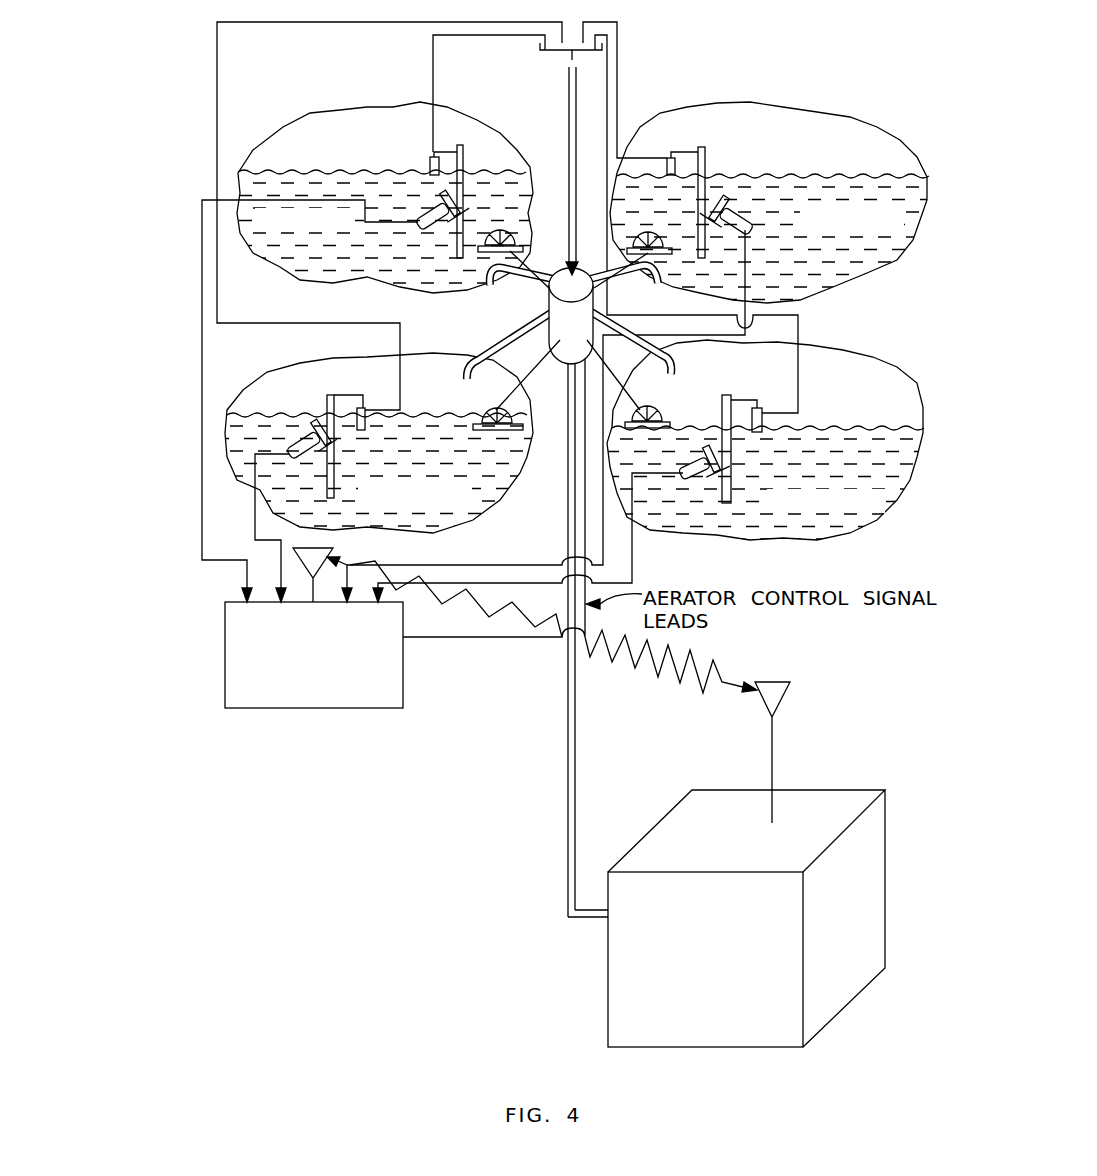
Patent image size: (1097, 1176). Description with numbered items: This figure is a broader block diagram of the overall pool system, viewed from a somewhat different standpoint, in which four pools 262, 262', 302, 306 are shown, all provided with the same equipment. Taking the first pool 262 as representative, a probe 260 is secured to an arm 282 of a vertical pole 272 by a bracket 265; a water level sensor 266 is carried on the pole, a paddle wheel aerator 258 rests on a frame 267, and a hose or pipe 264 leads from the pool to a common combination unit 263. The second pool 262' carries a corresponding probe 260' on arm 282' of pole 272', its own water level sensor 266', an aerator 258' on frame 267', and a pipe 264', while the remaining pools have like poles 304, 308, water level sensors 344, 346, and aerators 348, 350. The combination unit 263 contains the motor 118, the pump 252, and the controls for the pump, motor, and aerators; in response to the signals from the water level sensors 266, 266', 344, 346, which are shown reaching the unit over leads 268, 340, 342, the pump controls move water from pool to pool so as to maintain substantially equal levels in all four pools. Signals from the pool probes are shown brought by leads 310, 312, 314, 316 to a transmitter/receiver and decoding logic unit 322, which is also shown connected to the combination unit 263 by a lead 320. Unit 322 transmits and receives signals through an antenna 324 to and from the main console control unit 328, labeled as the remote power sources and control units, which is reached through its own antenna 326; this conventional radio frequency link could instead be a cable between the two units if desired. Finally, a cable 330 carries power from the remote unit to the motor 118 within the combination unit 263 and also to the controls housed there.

The pool 262 is at (385, 188).
The pool 262' is at (380, 437).
The pool #3 302 is at (836, 114).
The pool #4 306 is at (890, 364).
The water level sensor lead 268 is at (469, 37).
The water level sensor 266 is at (420, 157).
The vertical pole 272 is at (481, 201).
The bracket 265 is at (430, 205).
The probe 260 is at (406, 224).
The arm 282 is at (439, 238).
The paddle wheel aerator 258 is at (504, 214).
The frame 267 is at (495, 227).
The hose or pipe 264 is at (521, 288).
The water supply pipe 264' is at (505, 343).
The common combination unit 263 is at (556, 346).
The aerator 258' is at (487, 401).
The aerator base 267' is at (498, 445).
The guide rod 272' is at (357, 432).
The water level sensor 266' is at (370, 433).
The float 260' is at (291, 439).
The float arm 282' is at (302, 464).
The guide rod 304 is at (706, 162).
The water level sensor 344 is at (668, 158).
The aerator 348 is at (646, 233).
The guide rod 308 is at (732, 397).
The water level sensor 346 is at (765, 432).
The aerator 350 is at (646, 409).
The sensor lead 340 is at (602, 21).
The sensor lead 342 is at (802, 327).
The float signal lead 310 is at (227, 562).
The float signal lead 312 is at (255, 527).
The float signal lead 314 is at (510, 563).
The float signal lead 316 is at (634, 558).
The aerator control lead 320 is at (513, 638).
The transmission/receiver and decoding unit 322 is at (328, 709).
The antenna 324 is at (333, 549).
The antenna 326 is at (791, 684).
The main console control unit 328 is at (853, 781).
The cable 330 is at (575, 747).
The motor 118 is at (597, 266).
The pump 252 is at (572, 162).